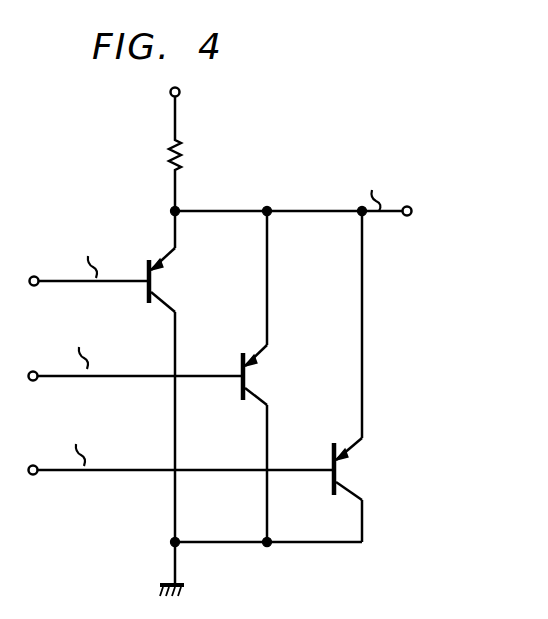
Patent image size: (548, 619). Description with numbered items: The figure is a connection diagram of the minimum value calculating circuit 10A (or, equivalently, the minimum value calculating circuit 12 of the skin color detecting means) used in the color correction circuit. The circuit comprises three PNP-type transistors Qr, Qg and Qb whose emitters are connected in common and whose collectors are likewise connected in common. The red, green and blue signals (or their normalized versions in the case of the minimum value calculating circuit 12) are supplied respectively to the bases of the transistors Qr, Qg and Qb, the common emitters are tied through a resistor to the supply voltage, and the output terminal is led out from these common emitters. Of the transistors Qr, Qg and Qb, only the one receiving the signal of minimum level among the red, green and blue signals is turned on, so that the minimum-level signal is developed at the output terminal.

The white color detecting means 10A is at (279, 151).
The minimum value calculating circuit 12 is at (324, 151).
The transistor Qr is at (163, 281).
The transistor Qg is at (256, 378).
The transistor Qb is at (346, 471).